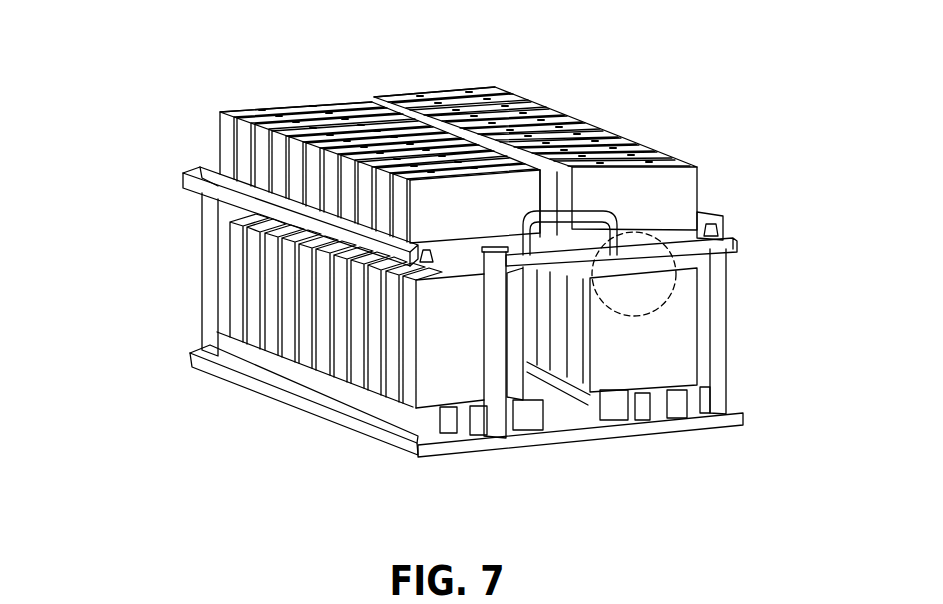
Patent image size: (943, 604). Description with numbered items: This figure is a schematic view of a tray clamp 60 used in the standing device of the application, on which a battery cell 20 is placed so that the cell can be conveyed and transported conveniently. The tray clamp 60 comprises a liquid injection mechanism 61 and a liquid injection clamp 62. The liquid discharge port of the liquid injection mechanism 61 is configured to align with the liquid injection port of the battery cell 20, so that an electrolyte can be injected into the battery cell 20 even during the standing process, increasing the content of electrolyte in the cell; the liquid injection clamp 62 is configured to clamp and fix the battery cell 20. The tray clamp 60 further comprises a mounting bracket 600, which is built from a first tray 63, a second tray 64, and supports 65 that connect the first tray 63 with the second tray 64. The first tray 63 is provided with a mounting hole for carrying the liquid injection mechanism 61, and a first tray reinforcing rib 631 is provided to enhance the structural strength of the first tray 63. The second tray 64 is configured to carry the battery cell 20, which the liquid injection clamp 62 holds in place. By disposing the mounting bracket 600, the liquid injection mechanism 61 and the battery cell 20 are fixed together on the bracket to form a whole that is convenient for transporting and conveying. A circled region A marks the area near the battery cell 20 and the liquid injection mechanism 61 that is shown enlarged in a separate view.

The tray clamp 60 is at (412, 41).
The mounting bracket 600 is at (92, 108).
The liquid injection mechanism 61 is at (670, 195).
The liquid injection clamp 62 is at (410, 407).
The first tray 63 is at (200, 178).
The first tray reinforcing rib 631 is at (210, 165).
The second tray 64 is at (253, 390).
The supports 65 is at (422, 315).
The battery cell 20 is at (670, 334).
The region A is at (666, 300).